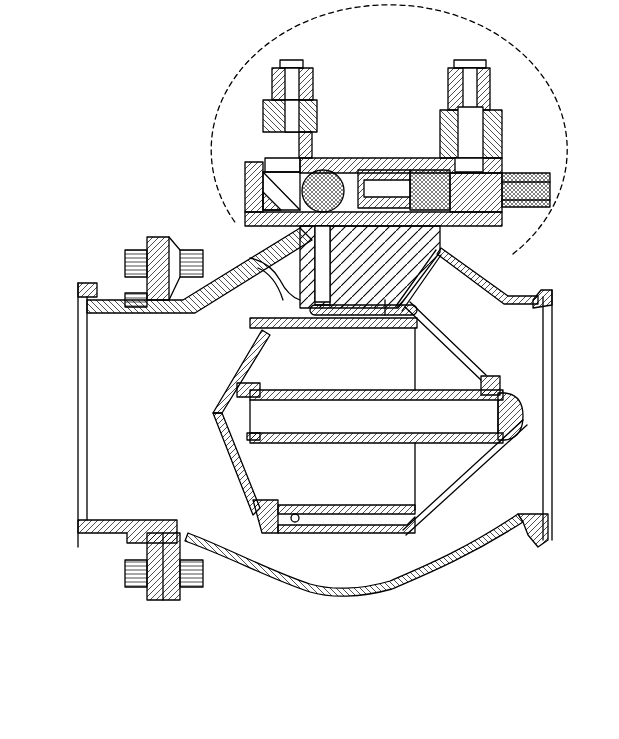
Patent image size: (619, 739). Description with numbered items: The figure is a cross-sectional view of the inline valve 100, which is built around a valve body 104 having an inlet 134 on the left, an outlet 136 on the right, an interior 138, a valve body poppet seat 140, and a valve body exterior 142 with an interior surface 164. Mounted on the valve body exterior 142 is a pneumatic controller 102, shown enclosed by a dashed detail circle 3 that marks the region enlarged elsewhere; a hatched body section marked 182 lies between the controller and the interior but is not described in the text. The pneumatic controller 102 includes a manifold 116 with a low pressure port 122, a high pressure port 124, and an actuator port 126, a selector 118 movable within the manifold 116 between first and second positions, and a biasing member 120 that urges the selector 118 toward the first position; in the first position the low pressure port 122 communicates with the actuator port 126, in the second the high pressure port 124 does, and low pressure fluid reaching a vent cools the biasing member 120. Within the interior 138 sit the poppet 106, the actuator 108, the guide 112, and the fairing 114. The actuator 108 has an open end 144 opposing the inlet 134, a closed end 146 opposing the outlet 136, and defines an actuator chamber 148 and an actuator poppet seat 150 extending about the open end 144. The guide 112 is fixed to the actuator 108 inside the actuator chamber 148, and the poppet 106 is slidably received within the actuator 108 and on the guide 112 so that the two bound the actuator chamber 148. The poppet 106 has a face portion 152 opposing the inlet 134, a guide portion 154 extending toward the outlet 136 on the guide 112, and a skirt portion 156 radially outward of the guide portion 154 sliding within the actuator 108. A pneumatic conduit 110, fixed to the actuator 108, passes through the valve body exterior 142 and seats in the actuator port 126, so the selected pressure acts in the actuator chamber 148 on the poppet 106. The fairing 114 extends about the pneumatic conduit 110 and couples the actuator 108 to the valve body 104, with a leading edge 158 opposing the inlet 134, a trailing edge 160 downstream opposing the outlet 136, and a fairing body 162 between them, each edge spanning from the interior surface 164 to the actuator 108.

The detail circle for FIG. 3 is at (211, 118).
The inline valve 100 is at (100, 608).
The pneumatic controller 102 is at (363, 122).
The valve body 104 is at (103, 280).
The poppet 106 is at (200, 432).
The actuator 108 is at (490, 366).
The pneumatic conduit 110 is at (330, 303).
The guide 112 is at (380, 430).
The fairing 114 is at (360, 303).
The manifold 116 is at (378, 158).
The selector 118 is at (314, 158).
The biasing member 120 is at (424, 165).
The low pressure port 122 is at (470, 60).
The high pressure port 124 is at (290, 58).
The actuator port 126 is at (302, 190).
The inlet 134 is at (113, 427).
The outlet 136 is at (512, 384).
The interior 138 is at (318, 568).
The valve body poppet seat 140 is at (190, 317).
The valve body exterior 142 is at (210, 283).
The open end 144 is at (258, 370).
The closed end 146 is at (500, 458).
The actuator chamber 148 is at (322, 381).
The actuator poppet seat 150 is at (247, 313).
The face portion 152 is at (230, 480).
The guide portion 154 is at (277, 373).
The skirt portion 156 is at (362, 503).
The leading edge 158 is at (287, 283).
The trailing edge 160 is at (433, 297).
The fairing body 162 is at (390, 303).
The interior surface 164 is at (230, 560).
The body section 182 is at (370, 267).